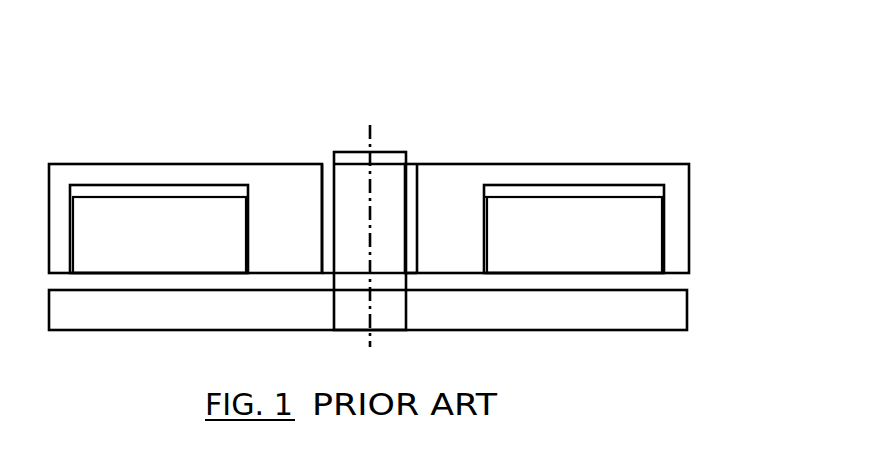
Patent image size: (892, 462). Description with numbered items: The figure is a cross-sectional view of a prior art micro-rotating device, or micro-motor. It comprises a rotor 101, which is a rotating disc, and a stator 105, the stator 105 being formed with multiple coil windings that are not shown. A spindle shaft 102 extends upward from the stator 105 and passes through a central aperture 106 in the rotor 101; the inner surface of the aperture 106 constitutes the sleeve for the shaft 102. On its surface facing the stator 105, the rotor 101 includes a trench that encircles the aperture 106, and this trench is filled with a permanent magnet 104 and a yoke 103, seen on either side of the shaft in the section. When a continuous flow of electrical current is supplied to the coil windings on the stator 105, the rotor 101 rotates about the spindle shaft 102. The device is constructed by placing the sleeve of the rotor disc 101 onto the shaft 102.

The rotor 101 is at (300, 205).
The spindle shaft 102 is at (382, 182).
The yoke 103 is at (630, 192).
The permanent magnet 104 is at (617, 249).
The stator 105 is at (629, 307).
The central aperture 106 is at (327, 167).